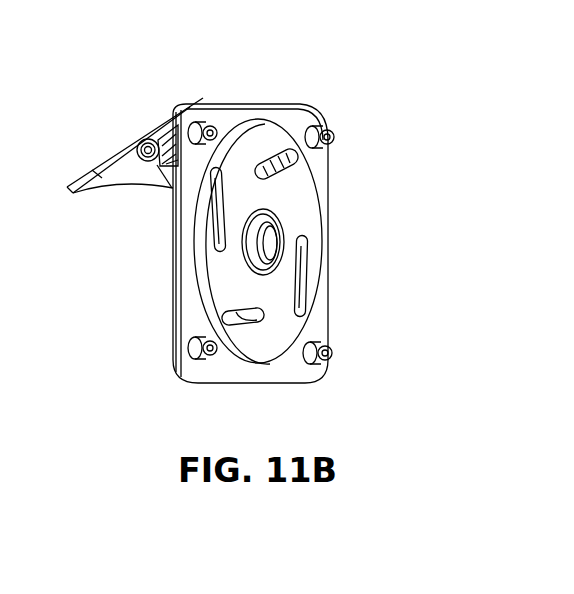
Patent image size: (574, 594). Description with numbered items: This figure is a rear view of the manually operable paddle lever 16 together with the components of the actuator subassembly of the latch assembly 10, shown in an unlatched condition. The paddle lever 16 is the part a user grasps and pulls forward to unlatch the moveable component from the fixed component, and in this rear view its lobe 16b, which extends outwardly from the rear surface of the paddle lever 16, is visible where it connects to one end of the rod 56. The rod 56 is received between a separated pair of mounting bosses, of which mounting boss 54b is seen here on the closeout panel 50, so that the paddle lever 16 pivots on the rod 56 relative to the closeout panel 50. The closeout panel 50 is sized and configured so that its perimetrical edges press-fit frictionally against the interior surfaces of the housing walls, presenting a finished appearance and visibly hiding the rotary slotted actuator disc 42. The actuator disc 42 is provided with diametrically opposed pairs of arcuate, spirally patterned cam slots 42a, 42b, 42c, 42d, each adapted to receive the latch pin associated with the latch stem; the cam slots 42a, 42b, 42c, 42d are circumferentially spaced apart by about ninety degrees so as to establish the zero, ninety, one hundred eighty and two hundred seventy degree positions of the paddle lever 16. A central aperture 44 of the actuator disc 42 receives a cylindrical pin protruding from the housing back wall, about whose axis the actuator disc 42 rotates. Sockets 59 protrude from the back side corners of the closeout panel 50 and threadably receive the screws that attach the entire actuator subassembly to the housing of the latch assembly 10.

The latch assembly 10 is at (316, 62).
The paddle lever 16 is at (93, 168).
The lobe 16b is at (130, 137).
The rotary slotted actuator disc 42 is at (311, 216).
The cam slot 42a is at (259, 157).
The cam slot 42b is at (310, 272).
The cam slot 42c is at (235, 316).
The cam slot 42d is at (213, 220).
The central aperture 44 is at (250, 258).
The closeout panel 50 is at (318, 162).
The mounting boss 54b is at (167, 124).
The rod 56 is at (142, 140).
The socket 59 is at (204, 122).